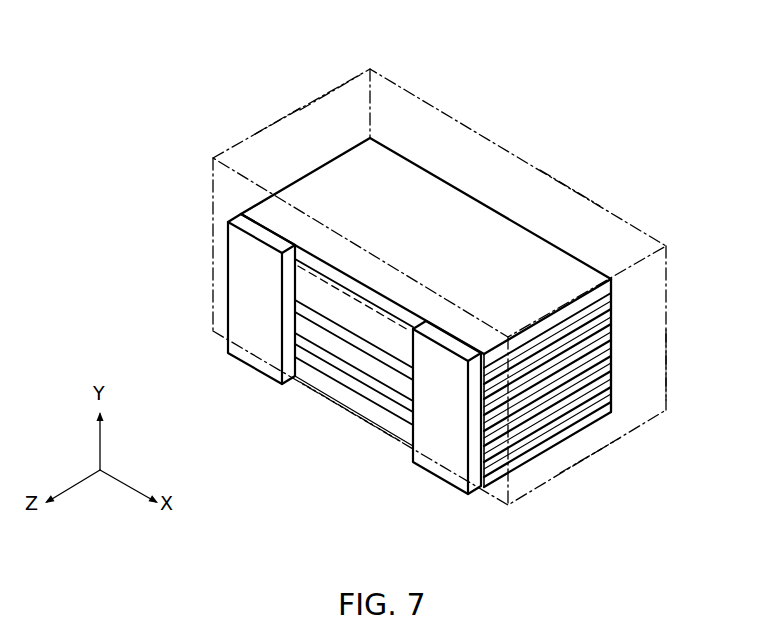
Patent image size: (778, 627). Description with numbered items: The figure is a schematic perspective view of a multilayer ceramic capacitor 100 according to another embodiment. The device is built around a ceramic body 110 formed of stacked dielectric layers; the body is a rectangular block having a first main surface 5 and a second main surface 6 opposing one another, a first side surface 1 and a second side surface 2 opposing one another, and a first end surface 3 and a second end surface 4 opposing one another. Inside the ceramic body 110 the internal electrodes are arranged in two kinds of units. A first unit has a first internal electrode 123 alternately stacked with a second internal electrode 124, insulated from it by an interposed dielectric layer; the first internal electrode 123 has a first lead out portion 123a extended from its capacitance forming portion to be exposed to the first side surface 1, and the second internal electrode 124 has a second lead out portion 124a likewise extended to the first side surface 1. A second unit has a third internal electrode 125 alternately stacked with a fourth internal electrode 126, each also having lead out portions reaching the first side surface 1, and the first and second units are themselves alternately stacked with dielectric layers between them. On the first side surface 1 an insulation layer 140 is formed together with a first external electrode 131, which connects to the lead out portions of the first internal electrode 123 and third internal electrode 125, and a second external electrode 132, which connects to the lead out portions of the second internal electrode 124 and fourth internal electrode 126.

The multilayer ceramic capacitor 100 is at (130, 242).
The ceramic body 110 is at (507, 173).
The first side surface 1 is at (326, 372).
The second side surface 2 is at (540, 164).
The first end surface 3 is at (282, 114).
The second end surface 4 is at (640, 372).
The first main surface 5 is at (335, 118).
The second main surface 6 is at (590, 461).
The first internal electrode 123 is at (413, 185).
The first lead out portion 123a is at (267, 213).
The second internal electrode 124 is at (612, 287).
The second lead out portion 124a is at (478, 353).
The third internal electrode 125 is at (612, 305).
The fourth internal electrode 126 is at (612, 320).
The first external electrode 131 is at (253, 330).
The second external electrode 132 is at (440, 437).
The insulation layer 140 is at (337, 418).